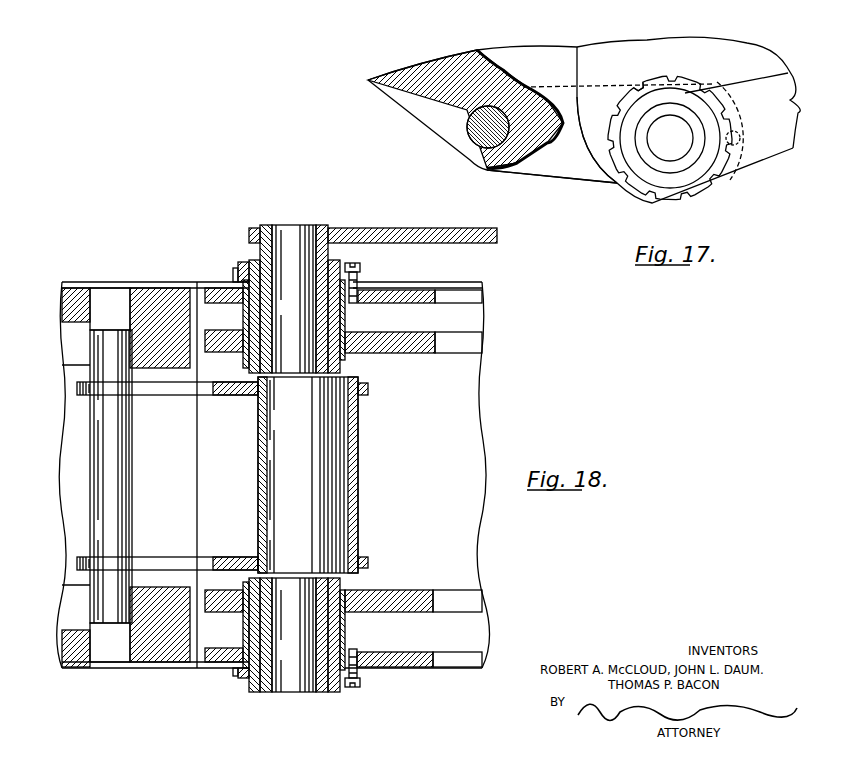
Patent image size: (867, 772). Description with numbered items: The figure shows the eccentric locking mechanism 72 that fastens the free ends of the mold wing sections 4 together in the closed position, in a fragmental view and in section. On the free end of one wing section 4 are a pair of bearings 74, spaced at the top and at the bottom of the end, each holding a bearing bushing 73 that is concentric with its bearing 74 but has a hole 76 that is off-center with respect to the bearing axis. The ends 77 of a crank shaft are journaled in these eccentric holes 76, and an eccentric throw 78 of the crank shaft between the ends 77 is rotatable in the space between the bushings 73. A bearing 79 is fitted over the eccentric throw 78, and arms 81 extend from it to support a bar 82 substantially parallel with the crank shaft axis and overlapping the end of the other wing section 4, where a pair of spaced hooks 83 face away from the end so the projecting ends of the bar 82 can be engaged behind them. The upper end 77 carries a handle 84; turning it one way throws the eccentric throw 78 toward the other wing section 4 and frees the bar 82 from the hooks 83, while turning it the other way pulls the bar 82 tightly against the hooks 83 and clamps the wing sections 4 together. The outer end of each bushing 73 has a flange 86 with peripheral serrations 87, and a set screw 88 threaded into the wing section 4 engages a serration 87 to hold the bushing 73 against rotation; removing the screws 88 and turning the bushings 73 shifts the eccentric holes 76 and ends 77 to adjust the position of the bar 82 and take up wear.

In FIG. 17, the wing section 4 is at (508, 53).
In FIG. 18, the wing section 4 is at (68, 473).
In FIG. 17, the eccentric locking mechanism 72 is at (595, 185).
In FIG. 18, the eccentric locking mechanism 72 is at (244, 220).
In FIG. 18, the bearing bushing 73 is at (247, 258).
In FIG. 18, the bearing 74 is at (345, 322).
In FIG. 18, the hole 76 is at (245, 314).
In FIG. 17, the crank shaft end 77 is at (671, 150).
In FIG. 18, the crank shaft end 77 is at (292, 233).
In FIG. 18, the eccentric throw 78 is at (342, 478).
In FIG. 18, the bearing 79 is at (358, 503).
In FIG. 17, the arm 81 is at (565, 172).
In FIG. 18, the arm 81 is at (180, 390).
In FIG. 17, the bar 82 is at (482, 142).
In FIG. 18, the bar 82 is at (125, 472).
In FIG. 17, the hook 83 is at (487, 170).
In FIG. 18, the hook 83 is at (125, 292).
In FIG. 17, the handle 84 is at (790, 78).
In FIG. 18, the handle 84 is at (390, 240).
In FIG. 17, the flange 86 is at (655, 80).
In FIG. 18, the flange 86 is at (243, 265).
In FIG. 17, the serration 87 is at (636, 82).
In FIG. 18, the serration 87 is at (233, 274).
In FIG. 17, the set screw 88 is at (741, 141).
In FIG. 18, the set screw 88 is at (360, 267).